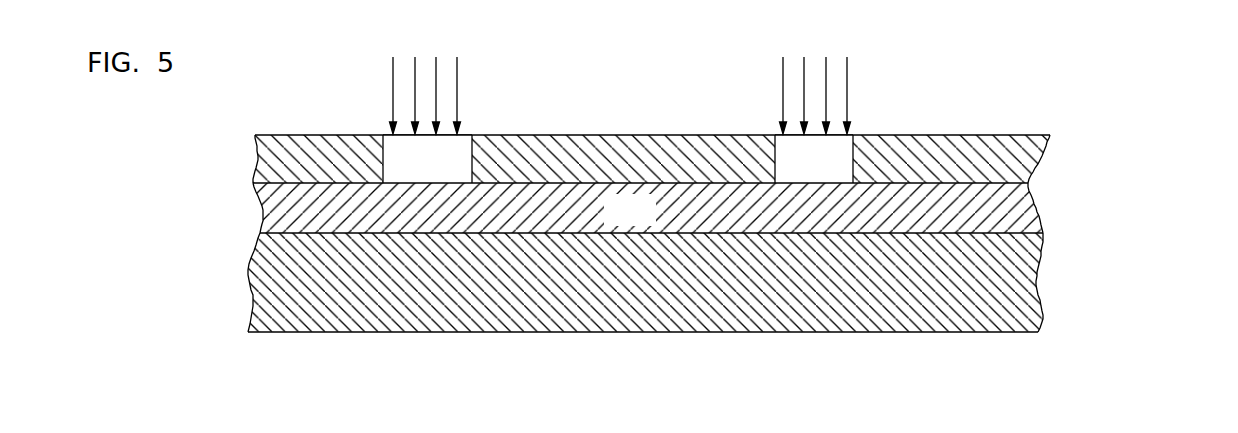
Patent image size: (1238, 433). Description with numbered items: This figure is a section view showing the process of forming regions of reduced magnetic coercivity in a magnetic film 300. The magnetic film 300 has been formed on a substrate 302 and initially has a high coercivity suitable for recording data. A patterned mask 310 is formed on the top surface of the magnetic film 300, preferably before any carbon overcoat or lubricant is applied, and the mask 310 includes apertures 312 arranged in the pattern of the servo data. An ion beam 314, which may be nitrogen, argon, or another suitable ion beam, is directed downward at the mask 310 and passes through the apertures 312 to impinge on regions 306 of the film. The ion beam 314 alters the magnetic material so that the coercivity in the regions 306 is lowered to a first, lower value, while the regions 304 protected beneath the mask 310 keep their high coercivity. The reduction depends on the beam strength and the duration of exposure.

The magnetic film 300 is at (1043, 213).
The substrate 302 is at (1037, 274).
The regions protected by mask 304 is at (280, 215).
The regions of lowered coercivity 306 is at (397, 215).
The patterned mask 310 is at (305, 143).
The apertures 312 is at (468, 148).
The ion beam 314 is at (458, 75).